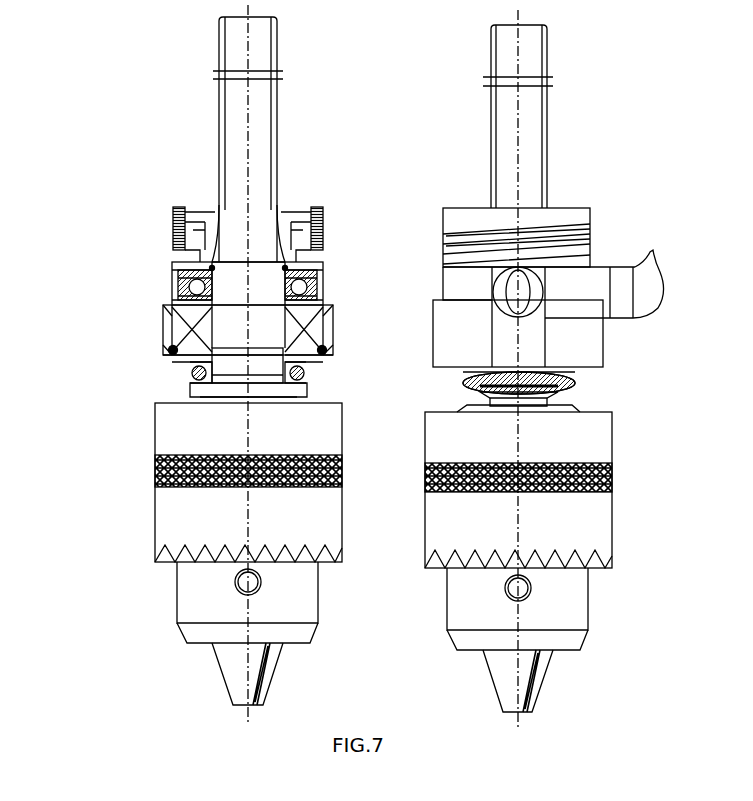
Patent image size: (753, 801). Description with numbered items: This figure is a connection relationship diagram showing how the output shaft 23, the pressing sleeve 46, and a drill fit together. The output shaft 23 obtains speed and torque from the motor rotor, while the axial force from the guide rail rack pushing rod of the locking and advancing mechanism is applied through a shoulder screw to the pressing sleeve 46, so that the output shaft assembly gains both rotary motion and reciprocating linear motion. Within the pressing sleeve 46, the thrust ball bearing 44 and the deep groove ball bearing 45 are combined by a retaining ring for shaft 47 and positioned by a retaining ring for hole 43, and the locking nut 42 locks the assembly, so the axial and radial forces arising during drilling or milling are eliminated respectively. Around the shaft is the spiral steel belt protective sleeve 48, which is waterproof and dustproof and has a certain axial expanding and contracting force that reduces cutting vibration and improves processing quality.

The output shaft 23 is at (232, 143).
The spiral steel belt protective sleeve 48 is at (173, 213).
The retaining ring for shaft 47 is at (180, 250).
The pressing sleeve 46 is at (173, 283).
The deep groove ball bearing 45 is at (167, 298).
The thrust ball bearing 44 is at (162, 330).
The retaining ring for hole 43 is at (162, 358).
The locking nut 42 is at (202, 375).